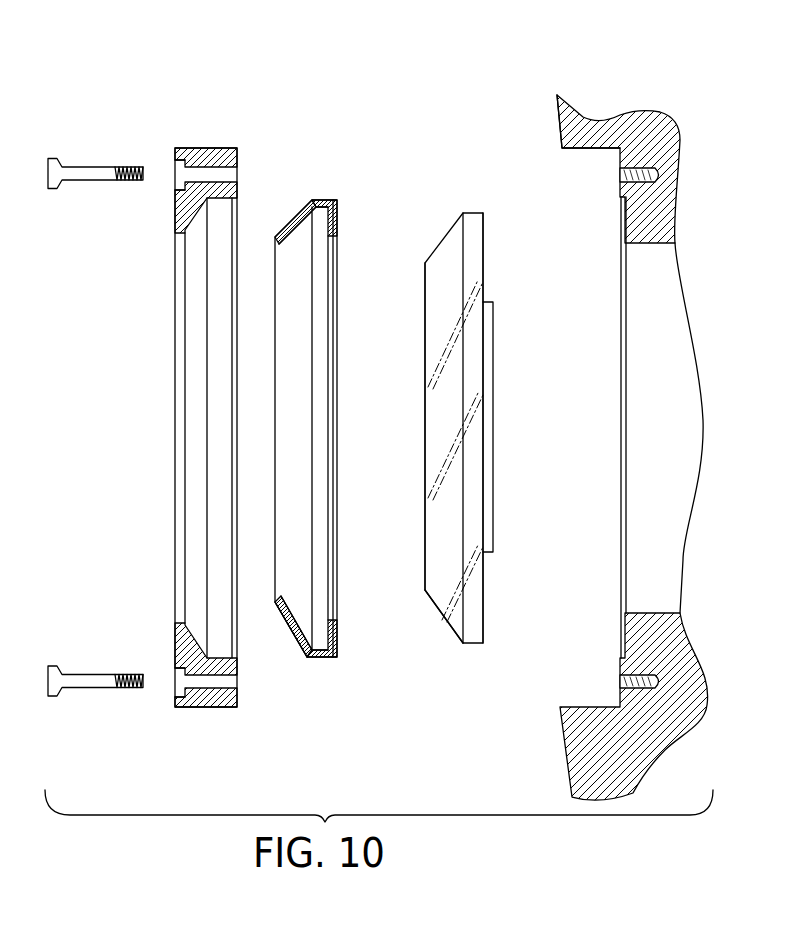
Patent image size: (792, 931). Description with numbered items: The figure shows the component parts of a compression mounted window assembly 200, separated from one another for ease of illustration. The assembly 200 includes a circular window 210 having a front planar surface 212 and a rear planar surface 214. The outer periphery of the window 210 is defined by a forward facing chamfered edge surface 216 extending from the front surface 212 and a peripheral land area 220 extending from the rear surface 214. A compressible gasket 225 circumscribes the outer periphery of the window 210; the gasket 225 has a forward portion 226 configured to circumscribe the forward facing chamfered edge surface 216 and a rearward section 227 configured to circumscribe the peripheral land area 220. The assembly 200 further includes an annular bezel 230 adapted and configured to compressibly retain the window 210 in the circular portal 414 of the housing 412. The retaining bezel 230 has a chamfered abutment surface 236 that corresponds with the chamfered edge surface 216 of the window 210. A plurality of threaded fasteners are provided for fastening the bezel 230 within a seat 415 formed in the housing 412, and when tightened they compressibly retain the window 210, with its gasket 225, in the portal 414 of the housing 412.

The compressible window assembly 200 is at (433, 150).
The circular window 210 is at (485, 222).
The front planar surface 212 is at (424, 467).
The rear planar surface 214 is at (488, 584).
The forward facing chamfered edge surface 216 is at (441, 620).
The peripheral land area 220 is at (470, 648).
The compressible gasket 225 is at (305, 198).
The forward portion 226 is at (290, 632).
The rearward section 227 is at (328, 198).
The annular bezel 230 is at (204, 147).
The chamfered abutment surface 236 is at (207, 215).
The housing 412 is at (655, 122).
The circular portal 414 is at (620, 223).
The seat 415 is at (595, 142).